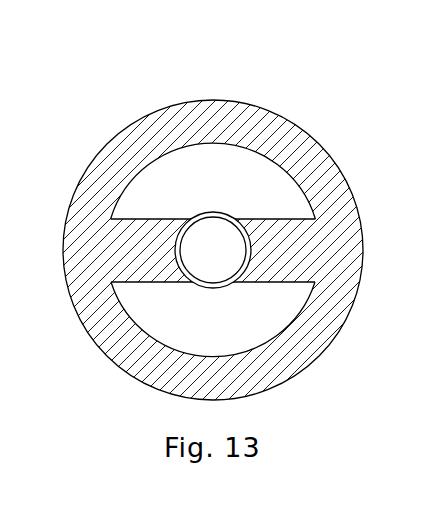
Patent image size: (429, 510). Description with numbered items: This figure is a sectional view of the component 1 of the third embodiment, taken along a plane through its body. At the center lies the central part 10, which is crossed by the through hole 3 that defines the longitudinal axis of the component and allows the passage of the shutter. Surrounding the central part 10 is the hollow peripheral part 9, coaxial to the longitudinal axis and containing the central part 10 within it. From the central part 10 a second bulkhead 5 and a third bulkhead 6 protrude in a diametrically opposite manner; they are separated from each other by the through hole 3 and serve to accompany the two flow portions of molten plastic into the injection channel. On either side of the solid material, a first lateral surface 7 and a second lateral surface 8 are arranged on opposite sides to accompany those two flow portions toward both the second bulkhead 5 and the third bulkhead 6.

The component 1 is at (287, 81).
The through hole 3 is at (214, 243).
The second bulkhead 5 is at (138, 245).
The third bulkhead 6 is at (287, 248).
The first lateral surface 7 is at (250, 313).
The second lateral surface 8 is at (255, 173).
The hollow peripheral part 9 is at (330, 175).
The central part 10 is at (198, 288).